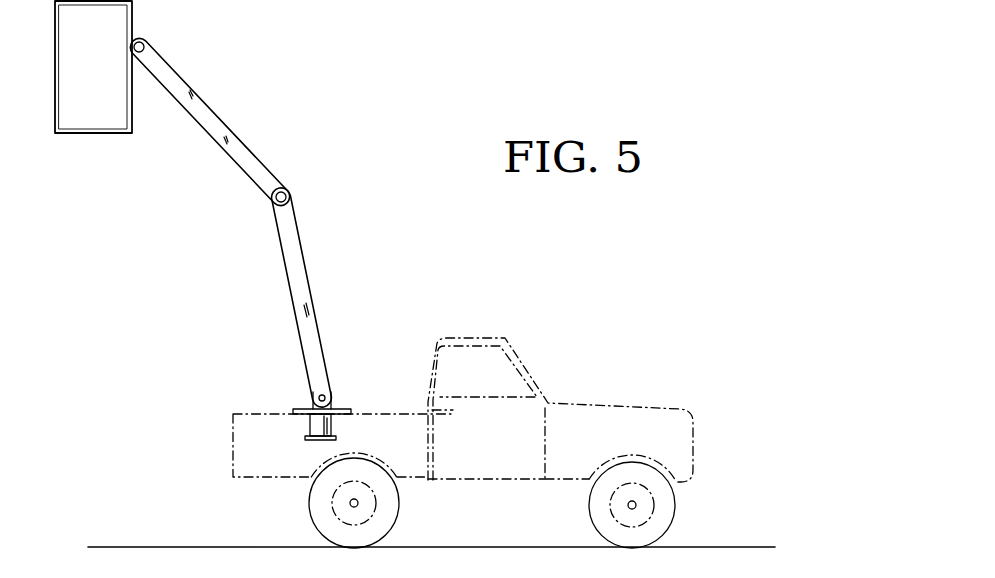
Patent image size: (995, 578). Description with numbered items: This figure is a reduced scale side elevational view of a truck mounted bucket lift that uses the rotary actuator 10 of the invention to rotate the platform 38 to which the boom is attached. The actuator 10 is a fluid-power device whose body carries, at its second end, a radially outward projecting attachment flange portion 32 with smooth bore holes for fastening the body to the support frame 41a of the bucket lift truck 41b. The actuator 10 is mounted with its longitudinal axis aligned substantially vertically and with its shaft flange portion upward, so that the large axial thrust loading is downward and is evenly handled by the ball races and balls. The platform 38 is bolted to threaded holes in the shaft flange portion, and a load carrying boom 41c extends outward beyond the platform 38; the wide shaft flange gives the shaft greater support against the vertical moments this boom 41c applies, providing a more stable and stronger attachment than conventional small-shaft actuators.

The rotary actuator 10 is at (330, 430).
The attachment flange portion 32 is at (305, 439).
The platform 38 is at (347, 409).
The support frame 41a is at (317, 443).
The bucket lift truck 41b is at (488, 481).
The load carrying boom 41c is at (296, 233).